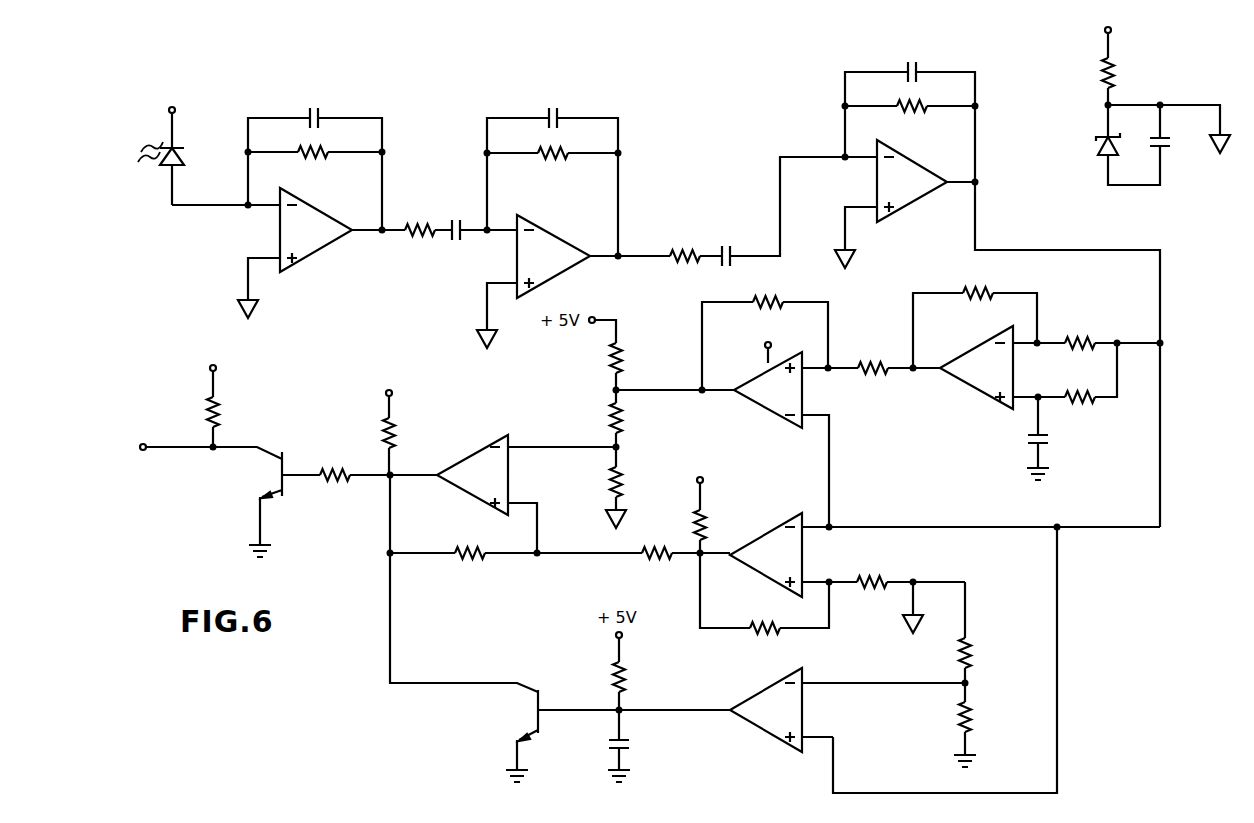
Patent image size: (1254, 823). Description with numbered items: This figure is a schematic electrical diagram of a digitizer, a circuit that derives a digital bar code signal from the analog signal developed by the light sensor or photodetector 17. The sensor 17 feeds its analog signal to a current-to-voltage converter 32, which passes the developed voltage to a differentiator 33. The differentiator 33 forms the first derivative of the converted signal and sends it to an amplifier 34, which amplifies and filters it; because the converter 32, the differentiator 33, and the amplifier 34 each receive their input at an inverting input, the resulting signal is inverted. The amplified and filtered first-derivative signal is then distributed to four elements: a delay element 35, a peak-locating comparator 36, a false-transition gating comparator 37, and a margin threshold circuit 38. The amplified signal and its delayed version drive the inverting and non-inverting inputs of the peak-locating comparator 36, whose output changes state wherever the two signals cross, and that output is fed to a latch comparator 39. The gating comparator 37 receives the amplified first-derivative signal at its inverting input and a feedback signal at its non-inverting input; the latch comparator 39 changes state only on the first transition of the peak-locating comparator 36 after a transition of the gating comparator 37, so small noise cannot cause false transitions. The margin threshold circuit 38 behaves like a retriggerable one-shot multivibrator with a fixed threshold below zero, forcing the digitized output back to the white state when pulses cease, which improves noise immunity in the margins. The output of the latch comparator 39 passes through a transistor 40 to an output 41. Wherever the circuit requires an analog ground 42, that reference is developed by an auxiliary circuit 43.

The photodetector 17 is at (165, 176).
The current-to-voltage converter 32 is at (317, 242).
The differentiator 33 is at (557, 243).
The amplifier 34 is at (905, 200).
The delay element 35 is at (975, 387).
The peak-locating comparator 36 is at (770, 402).
The false-transition gating comparator 37 is at (776, 527).
The margin threshold circuit 38 is at (762, 727).
The latch comparator 39 is at (478, 452).
The transistor 40 is at (285, 455).
The output 41 is at (140, 455).
The analog ground 42 is at (1224, 150).
The auxiliary circuit 43 is at (1099, 128).